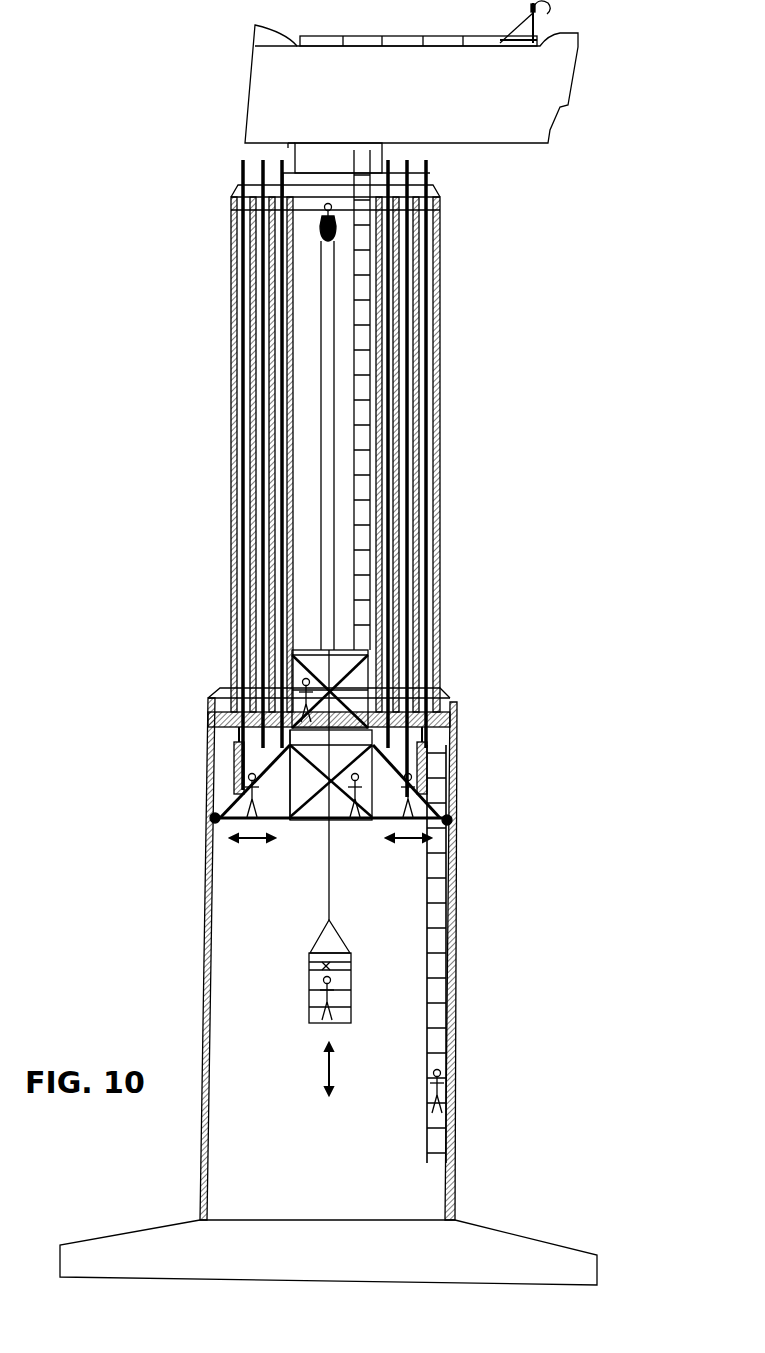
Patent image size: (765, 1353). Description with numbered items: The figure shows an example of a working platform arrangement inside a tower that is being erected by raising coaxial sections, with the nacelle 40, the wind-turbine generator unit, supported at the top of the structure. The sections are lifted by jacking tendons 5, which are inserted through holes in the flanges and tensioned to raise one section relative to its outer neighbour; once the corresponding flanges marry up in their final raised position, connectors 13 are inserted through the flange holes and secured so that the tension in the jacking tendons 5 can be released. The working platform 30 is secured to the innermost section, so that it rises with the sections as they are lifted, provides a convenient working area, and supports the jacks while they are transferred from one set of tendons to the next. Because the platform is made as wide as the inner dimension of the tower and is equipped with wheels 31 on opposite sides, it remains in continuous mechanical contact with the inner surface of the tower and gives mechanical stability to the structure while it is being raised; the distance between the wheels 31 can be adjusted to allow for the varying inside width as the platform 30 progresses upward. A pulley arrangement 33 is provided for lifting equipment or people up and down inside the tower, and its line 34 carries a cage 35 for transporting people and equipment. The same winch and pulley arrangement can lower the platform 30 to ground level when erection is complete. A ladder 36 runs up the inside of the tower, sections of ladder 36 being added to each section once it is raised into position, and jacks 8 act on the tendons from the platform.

The nacelle 40 is at (528, 80).
The jacking tendons 5 is at (427, 543).
The pulley arrangement 33 is at (336, 230).
The hoisting cable 34 is at (334, 298).
The connectors 13 is at (453, 702).
The working platform 30 is at (347, 823).
The hydraulic jacks 8 is at (232, 757).
The wheels 31 is at (452, 822).
The cage 35 is at (351, 988).
The ladder 36 is at (453, 1047).